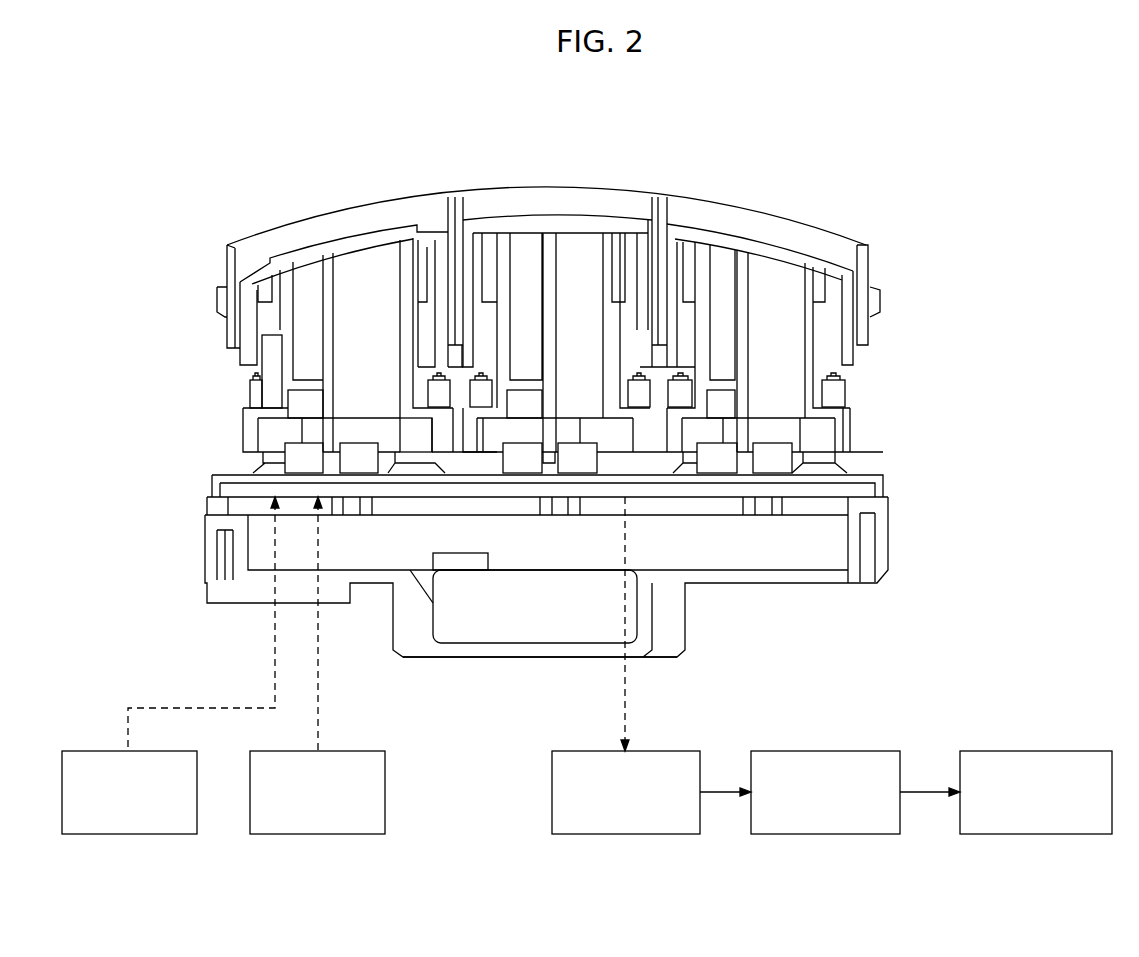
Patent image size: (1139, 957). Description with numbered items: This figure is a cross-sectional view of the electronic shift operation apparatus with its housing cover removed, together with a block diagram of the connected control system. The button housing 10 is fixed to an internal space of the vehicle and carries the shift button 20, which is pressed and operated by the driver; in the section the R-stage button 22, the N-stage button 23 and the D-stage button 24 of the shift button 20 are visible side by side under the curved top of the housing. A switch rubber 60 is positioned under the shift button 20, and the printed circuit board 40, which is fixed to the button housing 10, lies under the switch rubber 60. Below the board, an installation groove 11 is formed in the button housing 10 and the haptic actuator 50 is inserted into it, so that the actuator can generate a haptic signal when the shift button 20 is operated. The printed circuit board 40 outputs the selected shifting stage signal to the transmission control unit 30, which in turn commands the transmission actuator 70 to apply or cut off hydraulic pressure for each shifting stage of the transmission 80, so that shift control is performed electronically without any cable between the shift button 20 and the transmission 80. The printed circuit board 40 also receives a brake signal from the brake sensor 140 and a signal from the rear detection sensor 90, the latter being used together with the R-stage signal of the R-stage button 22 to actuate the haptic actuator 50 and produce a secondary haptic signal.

The button housing 10 is at (830, 545).
The installation groove 11 is at (479, 640).
The shift button 20 is at (822, 337).
The R-stage button 22 is at (363, 277).
The N-stage button 23 is at (577, 260).
The D-stage button 24 is at (775, 282).
The transmission control unit 30 is at (625, 834).
The printed circuit board 40 is at (390, 492).
The haptic actuator 50 is at (547, 627).
The switch rubber 60 is at (238, 480).
The transmission actuator 70 is at (820, 834).
The transmission 80 is at (1035, 834).
The rear detection sensor 90 is at (317, 834).
The brake sensor 140 is at (128, 834).